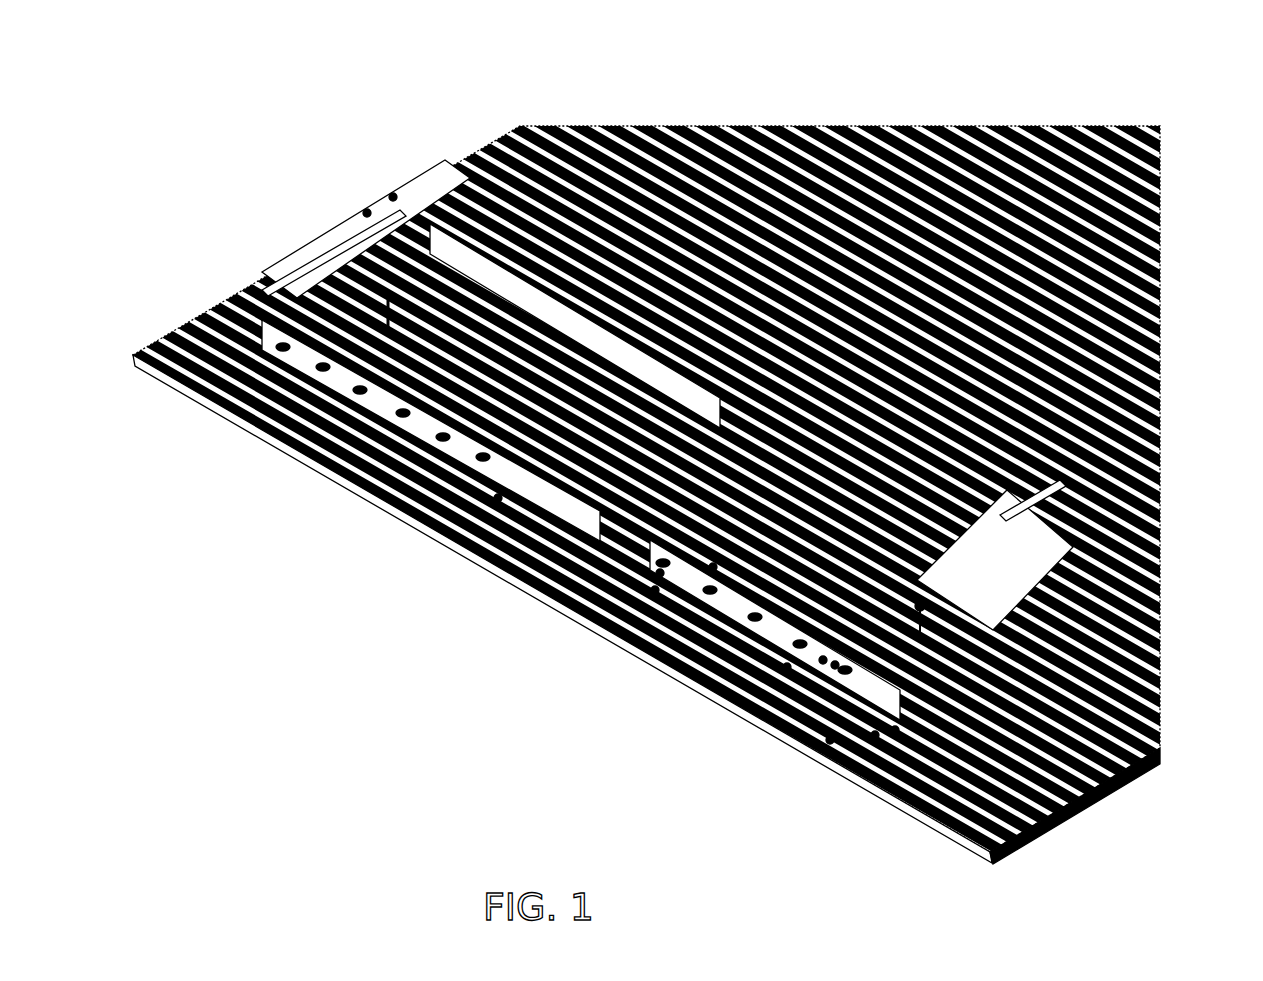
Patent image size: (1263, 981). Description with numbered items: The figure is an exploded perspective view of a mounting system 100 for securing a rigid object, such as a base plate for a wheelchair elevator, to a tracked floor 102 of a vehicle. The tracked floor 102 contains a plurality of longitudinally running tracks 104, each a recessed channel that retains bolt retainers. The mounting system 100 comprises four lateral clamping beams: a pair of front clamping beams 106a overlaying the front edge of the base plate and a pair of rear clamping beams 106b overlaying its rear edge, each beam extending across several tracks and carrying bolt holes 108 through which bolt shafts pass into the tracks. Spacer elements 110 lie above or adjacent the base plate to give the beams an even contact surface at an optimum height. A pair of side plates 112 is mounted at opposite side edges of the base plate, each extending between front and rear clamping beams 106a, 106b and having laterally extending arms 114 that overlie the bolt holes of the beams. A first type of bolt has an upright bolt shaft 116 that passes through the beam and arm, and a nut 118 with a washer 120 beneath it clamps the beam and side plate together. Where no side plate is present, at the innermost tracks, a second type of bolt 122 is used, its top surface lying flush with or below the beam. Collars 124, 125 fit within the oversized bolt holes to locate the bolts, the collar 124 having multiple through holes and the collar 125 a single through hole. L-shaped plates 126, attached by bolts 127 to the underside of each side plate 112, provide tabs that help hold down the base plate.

The mounting system 100 is at (172, 640).
The tracked floor 102 is at (203, 403).
The tracks 104 is at (317, 470).
The front clamping beams 106a is at (467, 445).
The rear clamping beams 106b is at (540, 300).
The bolt holes 108 is at (823, 660).
The spacer elements 110 is at (498, 498).
The side plates 112 is at (340, 243).
The laterally extending arms 114 is at (312, 290).
The upright bolt shaft 116 is at (875, 735).
The nut 118 is at (923, 605).
The washer 120 is at (917, 607).
The second type of bolt 122 is at (713, 567).
The collar 124 is at (655, 590).
The collar 125 is at (835, 665).
The L-shaped plates 126 is at (388, 317).
The bolts 127 is at (393, 197).